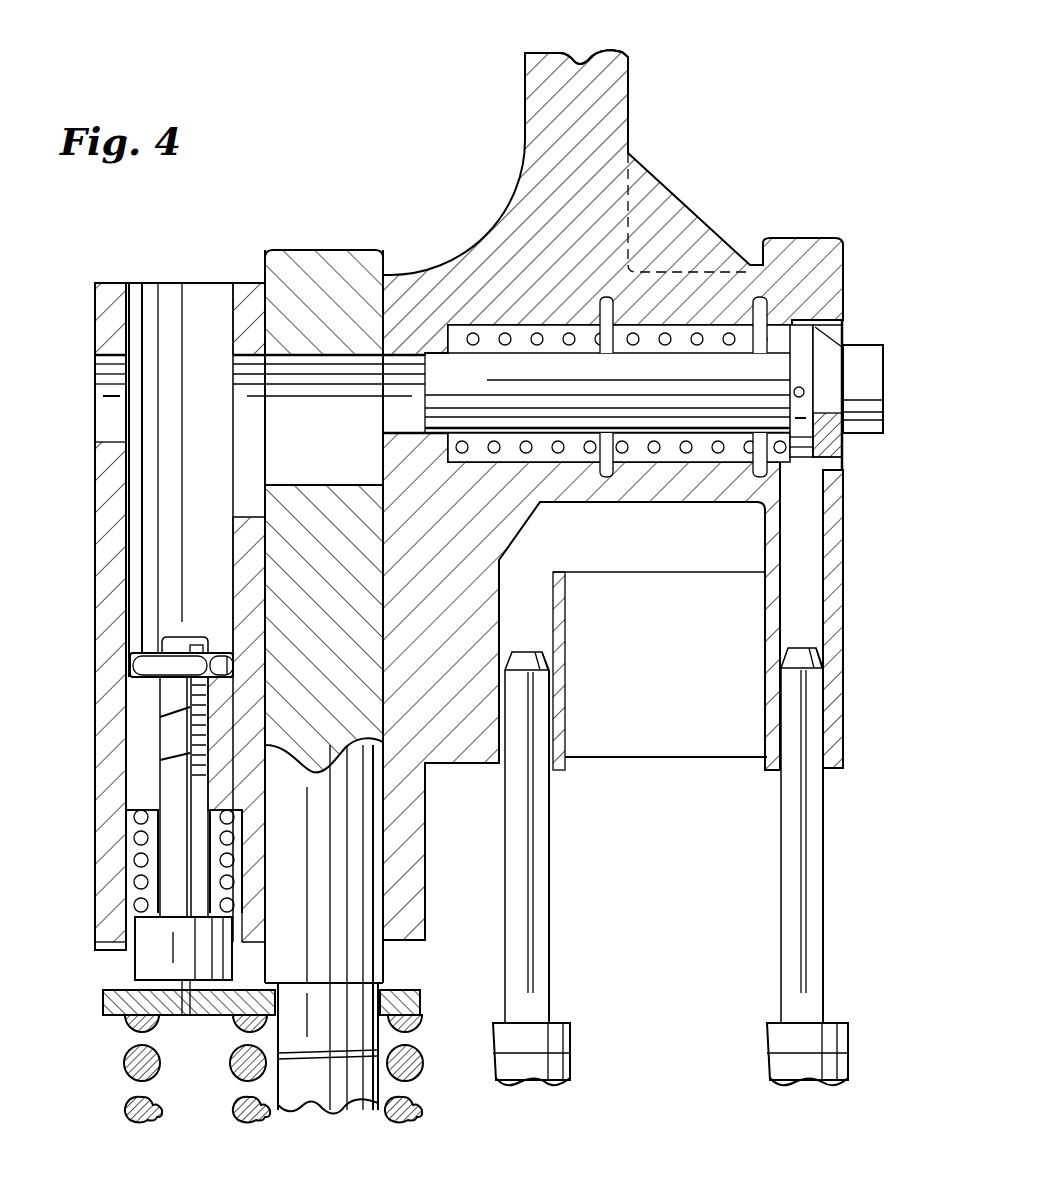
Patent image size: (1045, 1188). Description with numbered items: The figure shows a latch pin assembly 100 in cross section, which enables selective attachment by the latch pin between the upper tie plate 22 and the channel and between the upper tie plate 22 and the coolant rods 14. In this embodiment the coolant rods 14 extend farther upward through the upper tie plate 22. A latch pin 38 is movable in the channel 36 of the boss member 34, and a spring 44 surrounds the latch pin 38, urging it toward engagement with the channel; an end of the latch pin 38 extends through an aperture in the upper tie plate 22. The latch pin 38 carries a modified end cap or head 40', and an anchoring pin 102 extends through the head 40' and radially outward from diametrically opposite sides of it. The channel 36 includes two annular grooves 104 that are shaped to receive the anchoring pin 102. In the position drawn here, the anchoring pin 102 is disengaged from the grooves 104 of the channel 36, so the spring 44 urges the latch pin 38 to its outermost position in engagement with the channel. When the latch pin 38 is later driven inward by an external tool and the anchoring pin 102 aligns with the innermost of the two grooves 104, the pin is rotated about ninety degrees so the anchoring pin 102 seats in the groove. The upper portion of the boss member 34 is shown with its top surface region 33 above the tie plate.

The coolant rods 14 is at (353, 800).
The upper tie plate 22 is at (822, 258).
The head top surface 33 is at (558, 54).
The boss member 34 is at (547, 176).
The channel 36 is at (494, 333).
The latch pin 38 is at (438, 368).
The head 40' is at (866, 345).
The spring 44 is at (718, 453).
The latch pin assembly 100 is at (813, 140).
The anchoring pin 102 is at (801, 396).
The annular grooves 104 is at (607, 293).